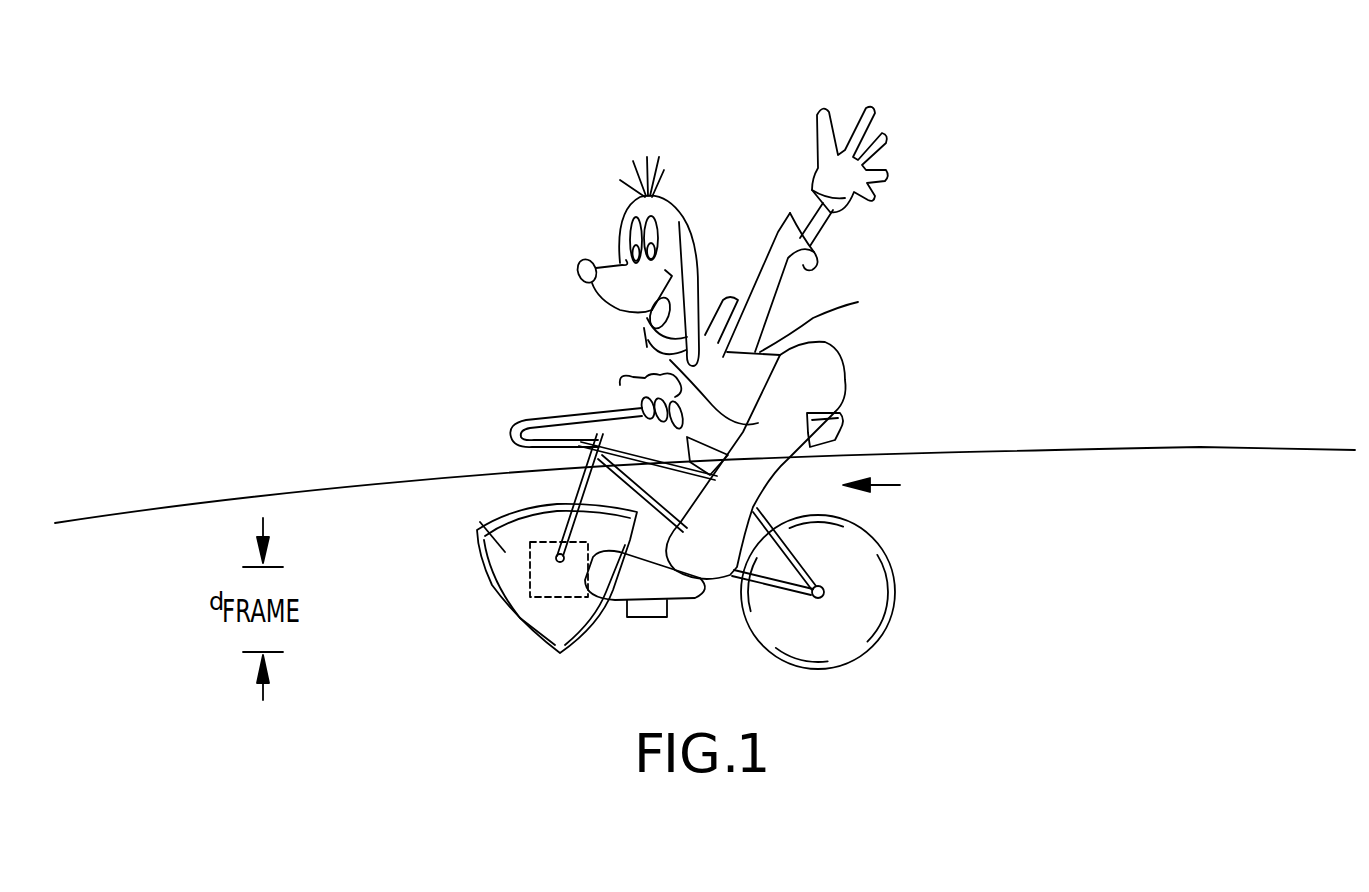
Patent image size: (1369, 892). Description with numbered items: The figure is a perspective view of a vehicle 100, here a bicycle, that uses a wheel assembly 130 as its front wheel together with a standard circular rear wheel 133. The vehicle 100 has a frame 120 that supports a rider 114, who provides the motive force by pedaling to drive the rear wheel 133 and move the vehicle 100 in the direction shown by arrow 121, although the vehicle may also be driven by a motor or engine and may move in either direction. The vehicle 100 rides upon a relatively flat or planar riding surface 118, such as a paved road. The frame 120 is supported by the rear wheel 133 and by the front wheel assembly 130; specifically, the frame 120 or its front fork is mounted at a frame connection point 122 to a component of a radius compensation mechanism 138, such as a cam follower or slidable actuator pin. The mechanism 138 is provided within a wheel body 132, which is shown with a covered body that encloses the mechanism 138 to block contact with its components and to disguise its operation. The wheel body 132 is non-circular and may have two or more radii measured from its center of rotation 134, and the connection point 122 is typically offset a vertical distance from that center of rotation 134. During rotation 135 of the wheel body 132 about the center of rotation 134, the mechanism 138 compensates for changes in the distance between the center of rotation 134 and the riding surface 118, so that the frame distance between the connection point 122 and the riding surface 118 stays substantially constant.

The vehicle 100 is at (457, 465).
The rider 114 is at (878, 296).
The riding surface 118 is at (1030, 478).
The frame 120 is at (560, 392).
The arrow 121 is at (887, 485).
The frame connection point 122 is at (552, 542).
The wheel assembly 130 is at (492, 583).
The wheel body 132 is at (493, 595).
The rear wheel 133 is at (893, 623).
The center of rotation 134 is at (552, 572).
The rotation 135 is at (483, 523).
The radius compensation mechanism 138 is at (580, 603).